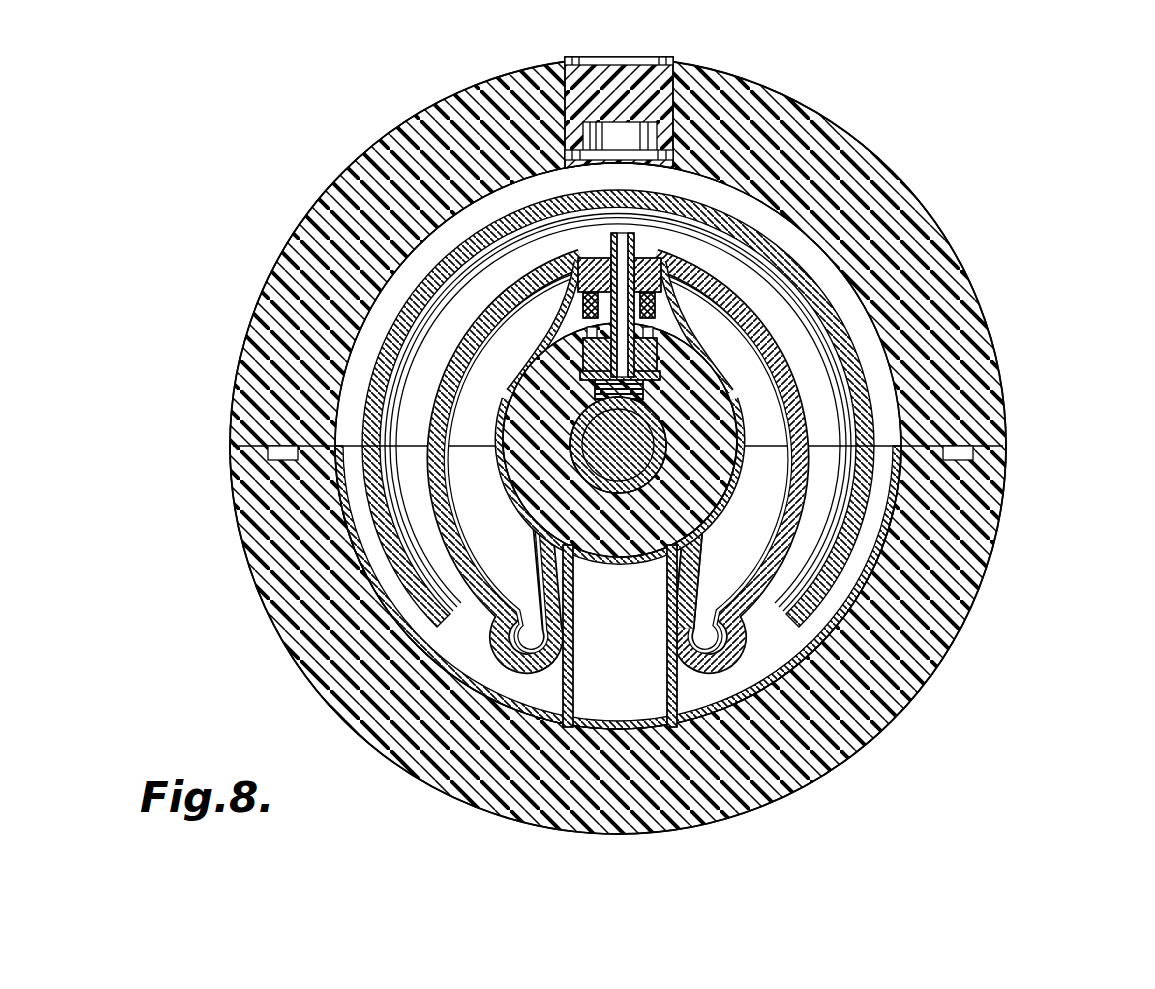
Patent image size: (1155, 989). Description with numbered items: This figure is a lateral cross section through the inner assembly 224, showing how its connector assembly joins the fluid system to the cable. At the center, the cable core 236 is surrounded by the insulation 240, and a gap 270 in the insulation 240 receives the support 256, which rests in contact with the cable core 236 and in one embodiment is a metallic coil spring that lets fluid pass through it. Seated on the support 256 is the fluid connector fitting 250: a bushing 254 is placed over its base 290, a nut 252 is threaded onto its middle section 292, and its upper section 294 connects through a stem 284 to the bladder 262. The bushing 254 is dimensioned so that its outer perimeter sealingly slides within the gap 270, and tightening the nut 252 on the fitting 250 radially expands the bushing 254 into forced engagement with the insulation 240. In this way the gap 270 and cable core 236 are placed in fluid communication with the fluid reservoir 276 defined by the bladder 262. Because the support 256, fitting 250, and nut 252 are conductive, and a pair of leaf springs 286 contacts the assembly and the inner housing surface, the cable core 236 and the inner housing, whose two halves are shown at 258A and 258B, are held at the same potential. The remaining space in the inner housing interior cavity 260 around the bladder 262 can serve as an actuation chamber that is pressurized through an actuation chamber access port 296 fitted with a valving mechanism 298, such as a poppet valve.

The inner assembly 224 is at (1072, 152).
The cable core 236 is at (712, 520).
The insulation 240 is at (610, 558).
The fluid connector fitting 250 is at (420, 115).
The nut 252 is at (398, 166).
The bushing 254 is at (518, 300).
The support 256 is at (505, 396).
The upper housing half 258A is at (300, 278).
The lower housing half 258B is at (305, 622).
The inner housing interior cavity 260 is at (643, 704).
The bladder 262 is at (700, 350).
The gap 270 is at (852, 546).
The fluid reservoir 276 is at (832, 482).
The stem 284 is at (665, 279).
The leaf springs 286 is at (513, 420).
The base 290 is at (740, 449).
The middle section 292 is at (705, 319).
The upper section 294 is at (633, 236).
The actuation chamber access port 296 is at (662, 59).
The valving mechanism 298 is at (583, 84).